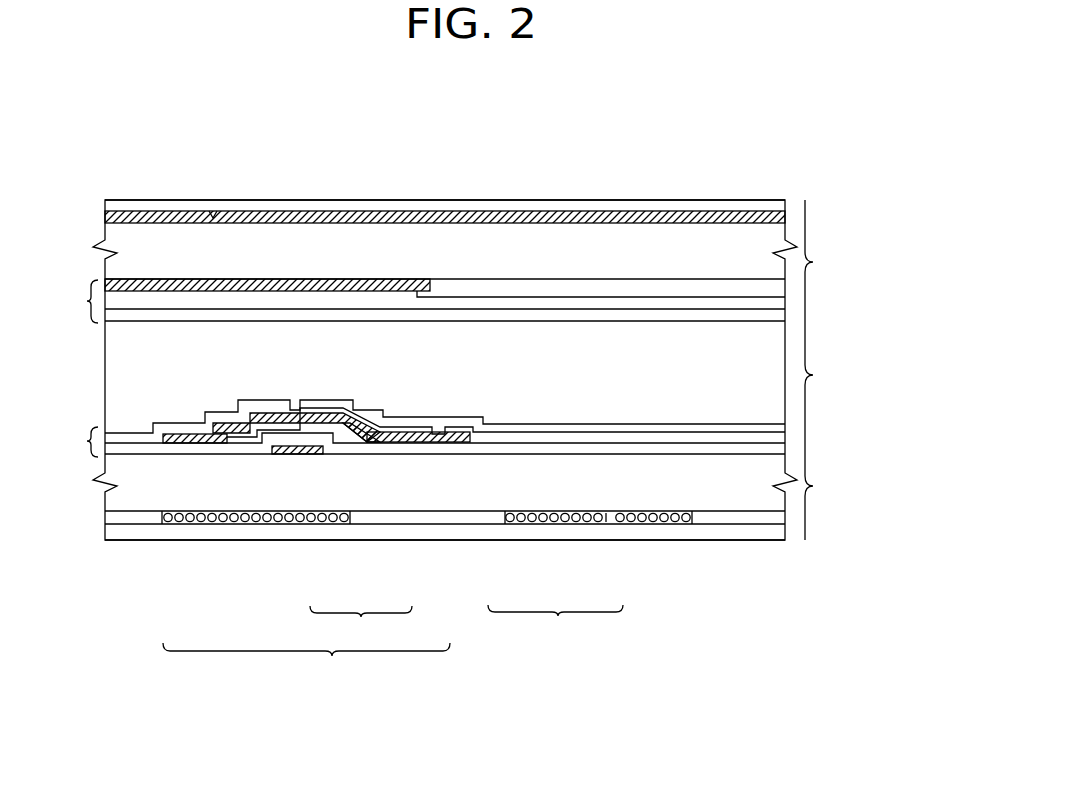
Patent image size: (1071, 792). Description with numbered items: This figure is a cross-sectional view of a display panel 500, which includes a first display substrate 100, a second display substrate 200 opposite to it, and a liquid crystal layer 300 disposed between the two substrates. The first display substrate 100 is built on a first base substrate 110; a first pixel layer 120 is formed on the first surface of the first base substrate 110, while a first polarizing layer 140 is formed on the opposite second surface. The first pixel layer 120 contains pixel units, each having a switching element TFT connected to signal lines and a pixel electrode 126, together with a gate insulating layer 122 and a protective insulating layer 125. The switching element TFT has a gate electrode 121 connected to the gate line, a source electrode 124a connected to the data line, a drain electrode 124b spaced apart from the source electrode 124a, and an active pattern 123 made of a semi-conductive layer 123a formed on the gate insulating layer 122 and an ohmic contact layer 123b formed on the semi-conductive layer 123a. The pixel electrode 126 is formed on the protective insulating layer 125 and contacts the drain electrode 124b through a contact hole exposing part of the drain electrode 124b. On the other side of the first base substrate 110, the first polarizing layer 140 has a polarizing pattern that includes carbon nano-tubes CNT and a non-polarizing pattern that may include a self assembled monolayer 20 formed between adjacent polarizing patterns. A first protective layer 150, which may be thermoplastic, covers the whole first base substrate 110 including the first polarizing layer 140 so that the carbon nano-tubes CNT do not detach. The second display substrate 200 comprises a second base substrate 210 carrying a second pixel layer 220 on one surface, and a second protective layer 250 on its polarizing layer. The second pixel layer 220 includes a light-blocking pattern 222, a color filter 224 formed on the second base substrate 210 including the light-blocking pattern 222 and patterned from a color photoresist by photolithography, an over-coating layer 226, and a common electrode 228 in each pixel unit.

The display panel 500 is at (457, 91).
The carbon nano-tube CNT is at (211, 214).
The second protective layer 250 is at (273, 207).
The light-blocking pattern 222 is at (393, 279).
The color filter 224 is at (447, 291).
The over-coating layer 226 is at (498, 306).
The common electrode 228 is at (575, 318).
The second base substrate 210 is at (637, 245).
The second pixel layer 220 is at (416, 227).
The second display substrate 200 is at (827, 259).
The liquid crystal layer 300 is at (827, 370).
The first display substrate 100 is at (827, 481).
The first base substrate 110 is at (715, 495).
The first pixel layer 120 is at (416, 539).
The gate electrode 121 is at (275, 455).
The gate insulating layer 122 is at (298, 455).
The active pattern 123 is at (312, 527).
The semi-conductive layer 123a is at (343, 442).
The ohmic contact layer 123b is at (388, 444).
The source electrode 124a is at (195, 444).
The drain electrode 124b is at (432, 444).
The protective insulating layer 125 is at (463, 434).
The pixel electrode 126 is at (757, 427).
The switching element TFT is at (445, 543).
The first polarizing layer 140 is at (445, 575).
The self assembled monolayer 20 is at (503, 525).
The first protective layer 150 is at (660, 527).